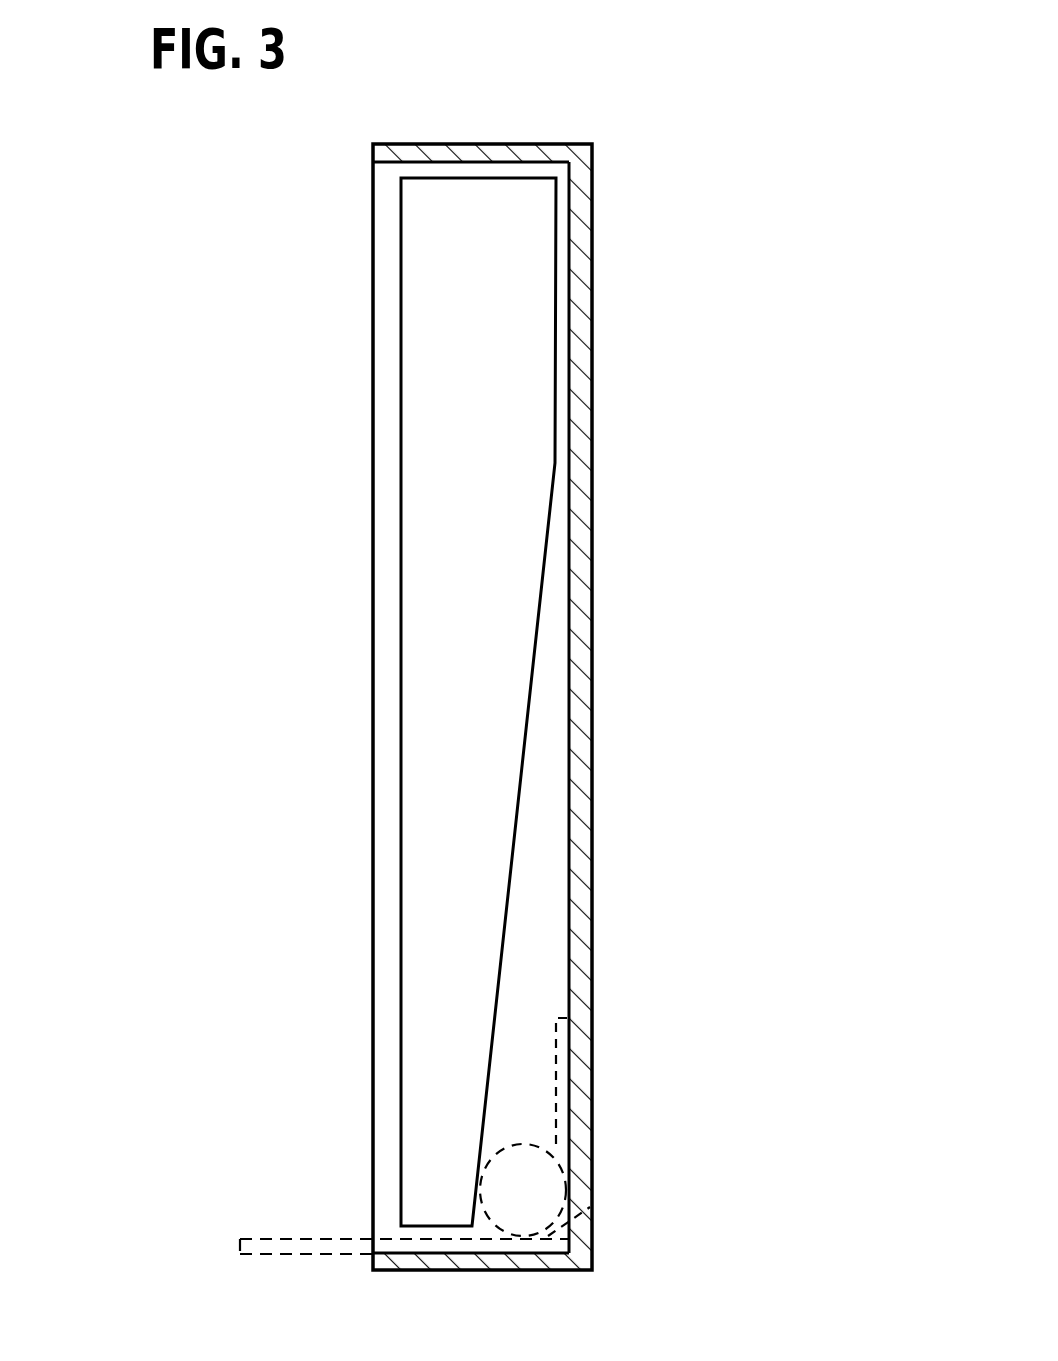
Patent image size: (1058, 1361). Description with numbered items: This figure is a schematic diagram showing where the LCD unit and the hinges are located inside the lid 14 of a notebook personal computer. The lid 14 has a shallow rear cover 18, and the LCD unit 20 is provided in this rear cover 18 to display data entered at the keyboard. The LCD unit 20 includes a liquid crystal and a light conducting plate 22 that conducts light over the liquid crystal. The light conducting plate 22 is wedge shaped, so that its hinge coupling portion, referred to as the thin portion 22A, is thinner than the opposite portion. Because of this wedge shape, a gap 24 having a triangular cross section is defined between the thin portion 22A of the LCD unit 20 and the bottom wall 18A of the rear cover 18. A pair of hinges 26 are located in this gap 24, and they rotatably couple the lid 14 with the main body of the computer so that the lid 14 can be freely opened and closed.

The lid 14 is at (722, 168).
The rear cover 18 is at (500, 145).
The bottom wall 18A is at (592, 832).
The LCD unit 20 is at (296, 707).
The light conducting plate 22 is at (294, 702).
The thin portion 22A is at (430, 1150).
The gap 24 is at (533, 1010).
The hinges 26 is at (505, 1115).